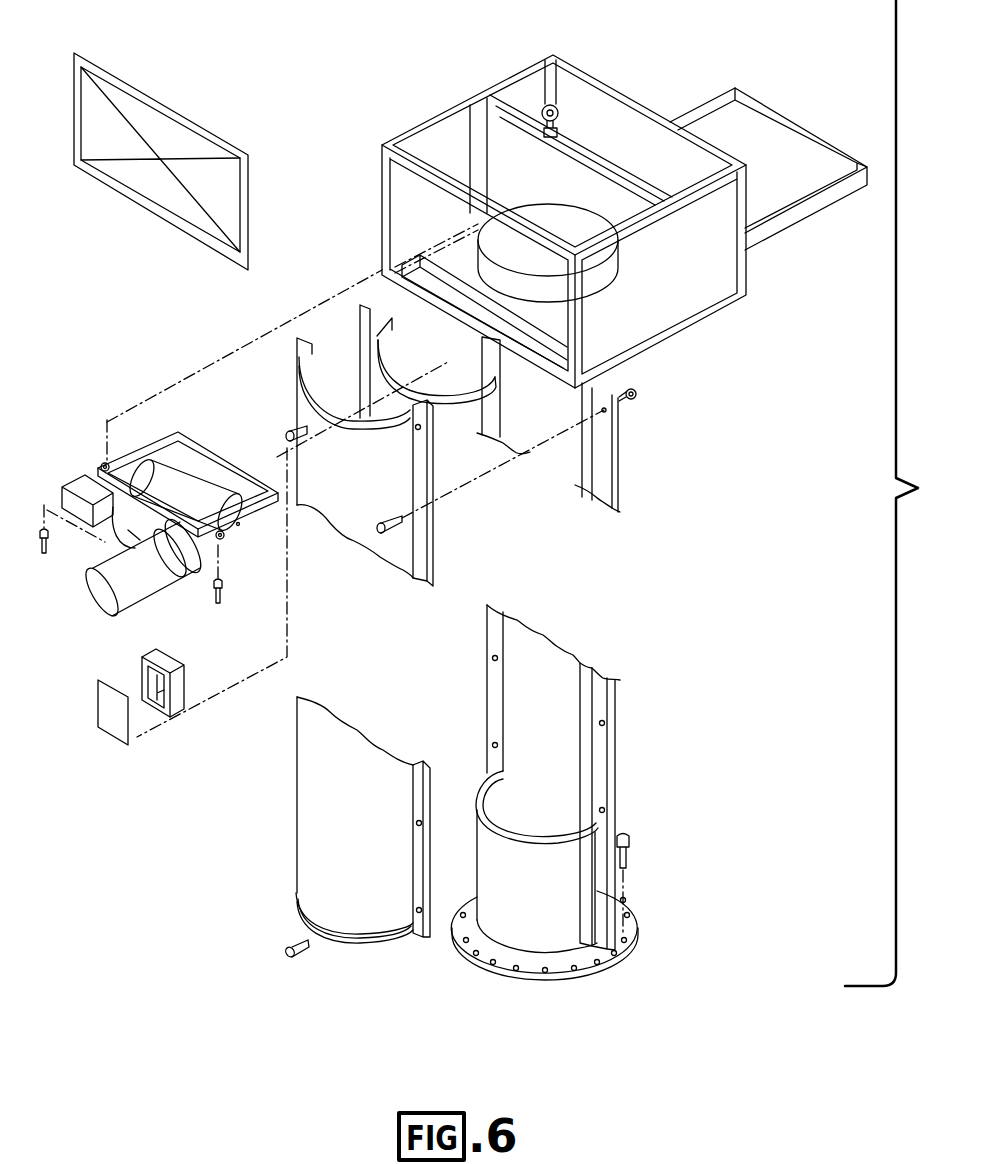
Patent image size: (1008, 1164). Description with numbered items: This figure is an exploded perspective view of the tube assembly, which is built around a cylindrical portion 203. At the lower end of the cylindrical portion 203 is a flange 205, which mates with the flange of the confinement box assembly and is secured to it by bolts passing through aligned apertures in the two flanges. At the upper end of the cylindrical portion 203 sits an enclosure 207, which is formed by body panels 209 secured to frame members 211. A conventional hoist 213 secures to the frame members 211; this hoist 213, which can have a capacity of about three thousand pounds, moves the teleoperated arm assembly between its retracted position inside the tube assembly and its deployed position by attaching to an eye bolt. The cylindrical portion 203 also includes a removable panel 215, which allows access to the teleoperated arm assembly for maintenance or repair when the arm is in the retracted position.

The cylindrical portion 203 is at (621, 765).
The flange 205 is at (638, 914).
The enclosure 207 is at (595, 224).
The body panels 209 is at (160, 193).
The frame members 211 is at (390, 210).
The hoist 213 is at (148, 437).
The removable panel 215 is at (327, 862).